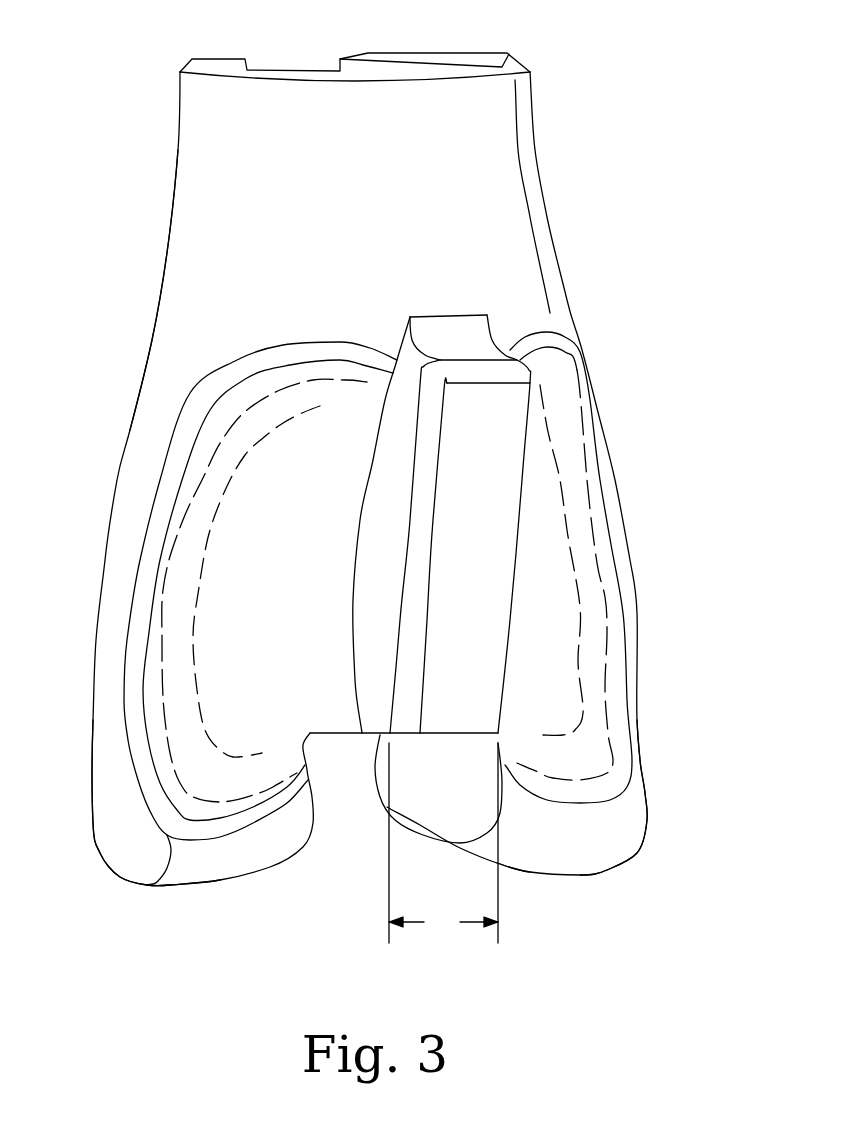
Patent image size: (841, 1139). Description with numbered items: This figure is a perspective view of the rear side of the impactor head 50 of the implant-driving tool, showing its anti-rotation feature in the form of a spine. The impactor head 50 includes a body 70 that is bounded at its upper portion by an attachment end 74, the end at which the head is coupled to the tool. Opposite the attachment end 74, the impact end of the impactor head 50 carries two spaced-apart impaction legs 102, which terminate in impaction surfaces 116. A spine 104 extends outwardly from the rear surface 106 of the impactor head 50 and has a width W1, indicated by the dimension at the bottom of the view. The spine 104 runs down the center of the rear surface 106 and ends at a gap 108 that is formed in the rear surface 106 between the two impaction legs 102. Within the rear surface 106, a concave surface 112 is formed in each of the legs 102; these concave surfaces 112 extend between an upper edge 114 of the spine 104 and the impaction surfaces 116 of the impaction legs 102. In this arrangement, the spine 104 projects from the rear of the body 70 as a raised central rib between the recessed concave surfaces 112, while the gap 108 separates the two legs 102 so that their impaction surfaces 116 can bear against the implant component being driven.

The impactor head 50 is at (376, 476).
The body 70 is at (165, 350).
The attachment end 74 is at (508, 55).
The impaction legs 102 is at (108, 828).
The spine 104 is at (465, 498).
The rear surface 106 is at (512, 230).
The gap 108 is at (332, 826).
The concave surfaces 112 is at (193, 538).
The upper edge 114 is at (453, 323).
The impaction surfaces 116 is at (170, 890).